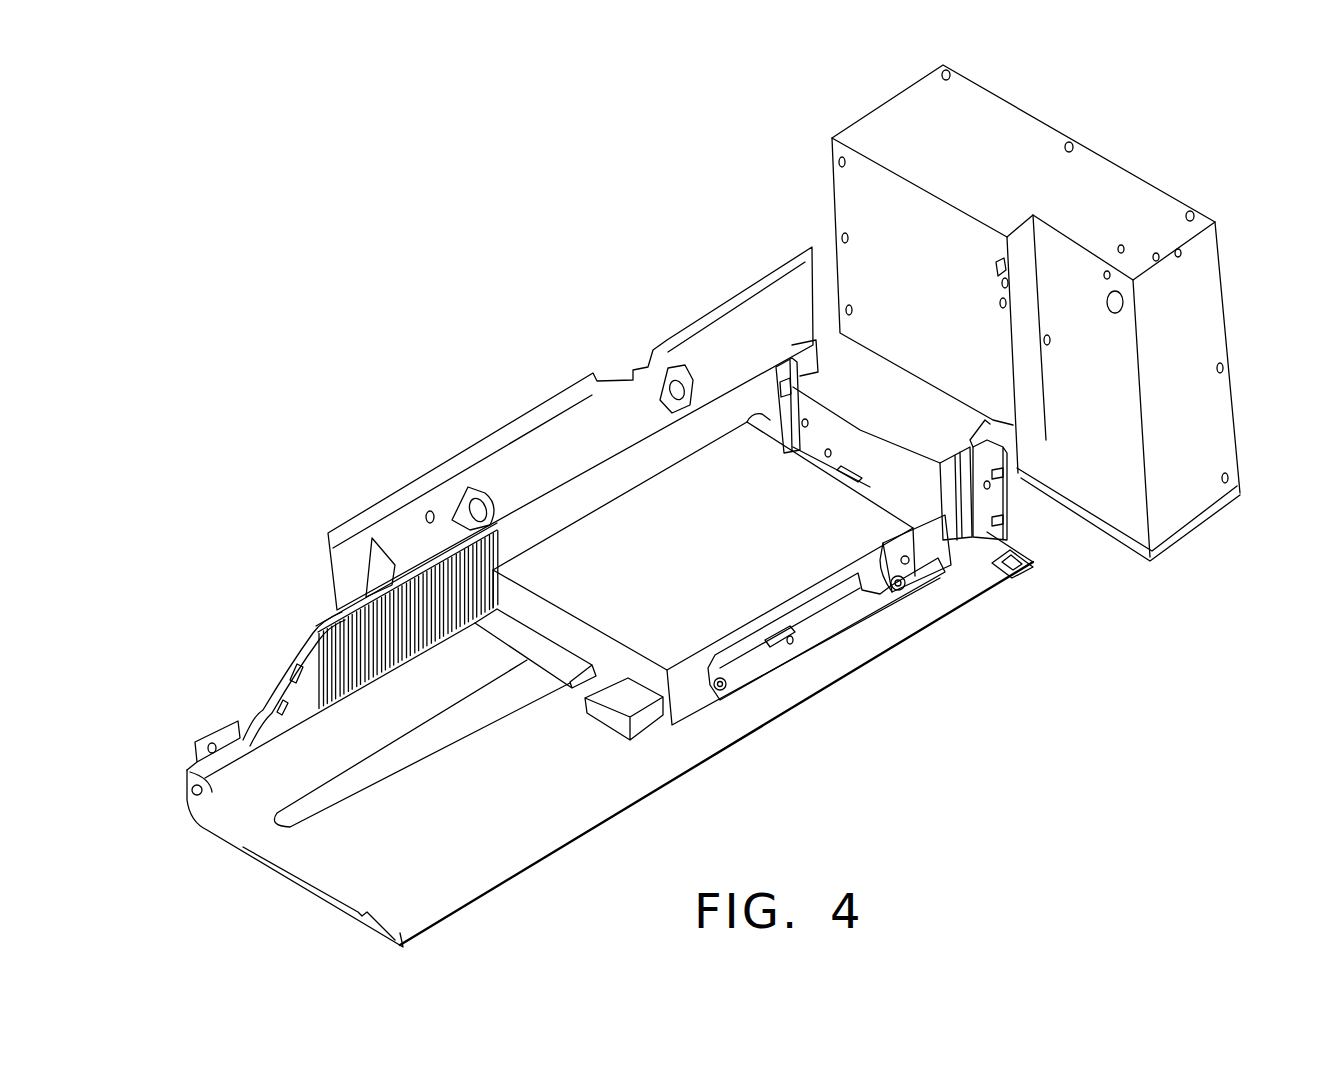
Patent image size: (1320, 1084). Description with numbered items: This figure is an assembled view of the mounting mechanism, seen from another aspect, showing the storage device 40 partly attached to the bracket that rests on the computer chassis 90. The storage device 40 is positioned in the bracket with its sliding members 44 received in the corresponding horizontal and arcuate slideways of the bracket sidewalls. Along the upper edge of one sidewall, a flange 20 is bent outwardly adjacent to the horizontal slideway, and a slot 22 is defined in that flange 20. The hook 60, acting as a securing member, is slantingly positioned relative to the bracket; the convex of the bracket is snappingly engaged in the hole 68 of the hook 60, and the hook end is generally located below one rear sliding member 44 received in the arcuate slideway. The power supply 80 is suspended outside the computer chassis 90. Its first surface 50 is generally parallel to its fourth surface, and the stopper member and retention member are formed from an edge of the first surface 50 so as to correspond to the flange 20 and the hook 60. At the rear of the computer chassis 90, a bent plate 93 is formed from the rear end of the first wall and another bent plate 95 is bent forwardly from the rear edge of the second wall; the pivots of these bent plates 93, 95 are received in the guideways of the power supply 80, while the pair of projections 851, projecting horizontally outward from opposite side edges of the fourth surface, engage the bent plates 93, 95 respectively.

The flange 20 is at (757, 635).
The slot 22 is at (795, 633).
The storage device 40 is at (680, 690).
The sliding members 44 is at (724, 690).
The first surface 50 is at (870, 215).
The hook 60 is at (908, 582).
The hole 68 is at (923, 580).
The power supply 80 is at (1107, 180).
The projections 851 is at (777, 388).
The computer chassis 90 is at (552, 453).
The bent plate 93 is at (1000, 500).
The bent plate 95 is at (794, 362).